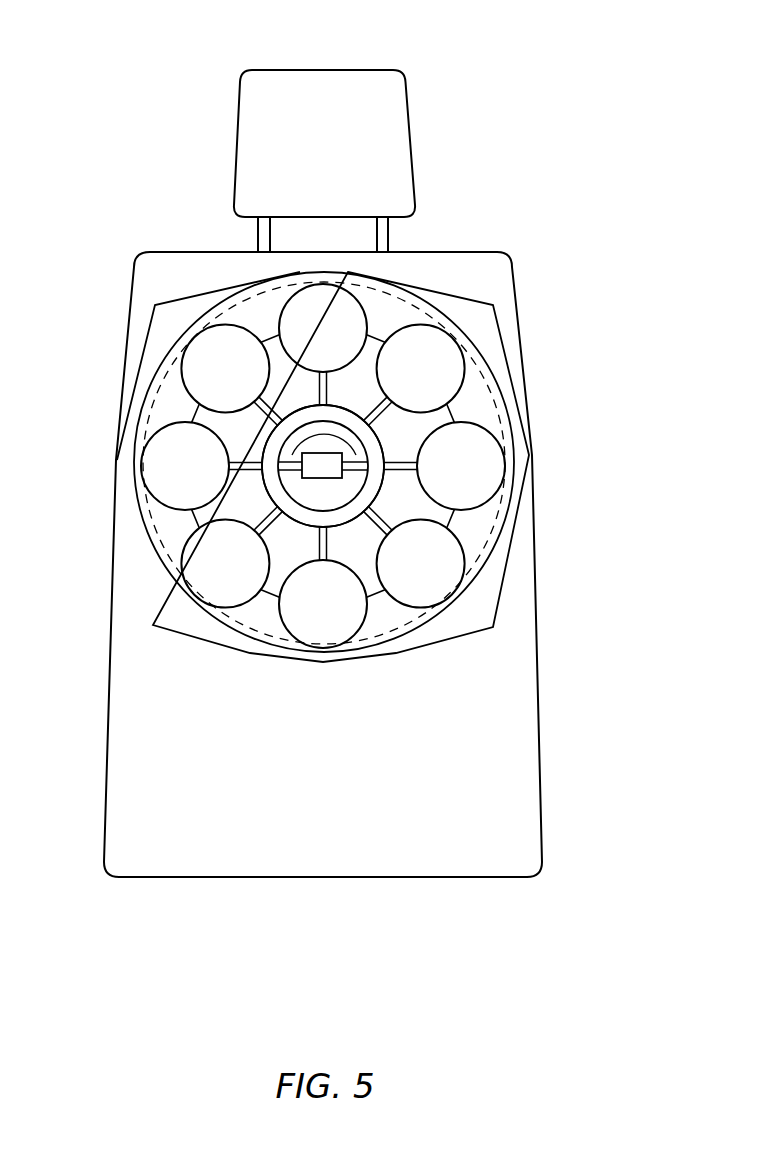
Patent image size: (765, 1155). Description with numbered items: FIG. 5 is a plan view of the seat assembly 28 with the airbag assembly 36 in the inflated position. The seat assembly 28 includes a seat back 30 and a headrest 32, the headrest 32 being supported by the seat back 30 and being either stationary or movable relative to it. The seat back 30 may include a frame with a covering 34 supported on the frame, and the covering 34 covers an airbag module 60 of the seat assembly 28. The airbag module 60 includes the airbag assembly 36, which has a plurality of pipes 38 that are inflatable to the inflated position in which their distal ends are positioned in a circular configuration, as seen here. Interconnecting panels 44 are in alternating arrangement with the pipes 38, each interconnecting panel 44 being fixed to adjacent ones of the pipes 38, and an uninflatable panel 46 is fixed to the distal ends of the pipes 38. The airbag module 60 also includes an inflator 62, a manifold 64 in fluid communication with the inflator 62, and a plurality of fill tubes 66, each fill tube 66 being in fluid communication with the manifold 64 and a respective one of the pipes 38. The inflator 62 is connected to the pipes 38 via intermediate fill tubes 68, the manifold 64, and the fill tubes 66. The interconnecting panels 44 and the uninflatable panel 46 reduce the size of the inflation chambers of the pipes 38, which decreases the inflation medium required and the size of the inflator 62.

The seat assembly 28 is at (133, 196).
The seat back 30 is at (530, 806).
The headrest 32 is at (373, 82).
The covering 34 is at (457, 635).
The airbag assembly 36 is at (538, 416).
The pipes 38 is at (323, 284).
The interconnecting panels 44 is at (267, 337).
The uninflatable panel 46 is at (501, 507).
The airbag module 60 is at (390, 439).
The inflator 62 is at (322, 466).
The manifold 64 is at (267, 488).
The fill tubes 66 is at (265, 413).
The intermediate fill tubes 68 is at (324, 440).